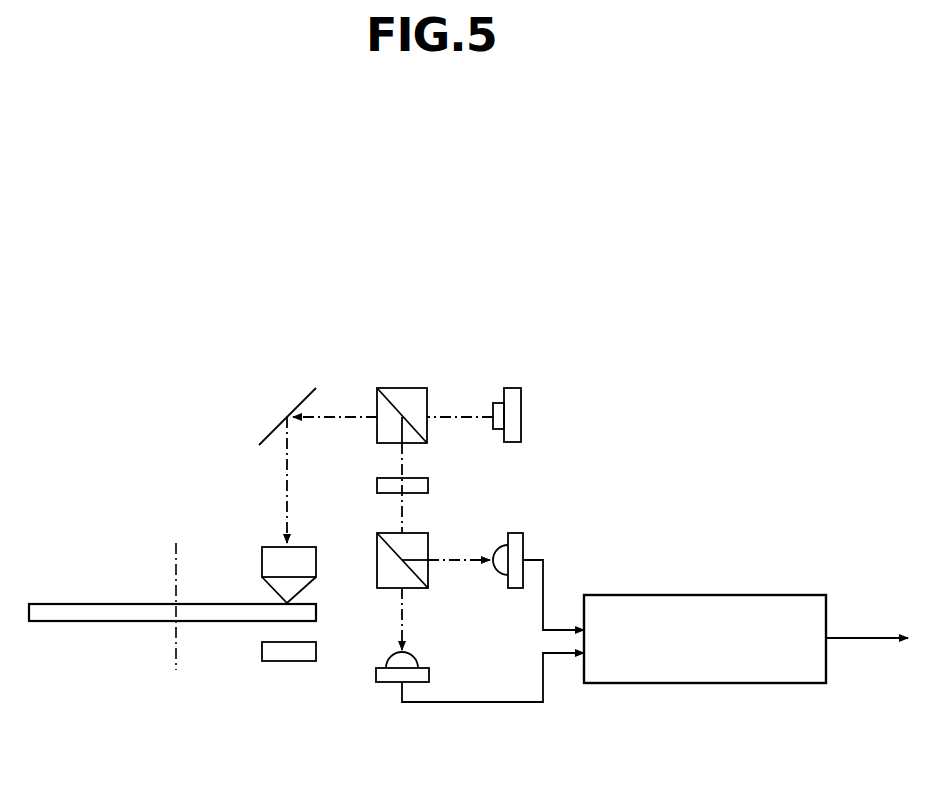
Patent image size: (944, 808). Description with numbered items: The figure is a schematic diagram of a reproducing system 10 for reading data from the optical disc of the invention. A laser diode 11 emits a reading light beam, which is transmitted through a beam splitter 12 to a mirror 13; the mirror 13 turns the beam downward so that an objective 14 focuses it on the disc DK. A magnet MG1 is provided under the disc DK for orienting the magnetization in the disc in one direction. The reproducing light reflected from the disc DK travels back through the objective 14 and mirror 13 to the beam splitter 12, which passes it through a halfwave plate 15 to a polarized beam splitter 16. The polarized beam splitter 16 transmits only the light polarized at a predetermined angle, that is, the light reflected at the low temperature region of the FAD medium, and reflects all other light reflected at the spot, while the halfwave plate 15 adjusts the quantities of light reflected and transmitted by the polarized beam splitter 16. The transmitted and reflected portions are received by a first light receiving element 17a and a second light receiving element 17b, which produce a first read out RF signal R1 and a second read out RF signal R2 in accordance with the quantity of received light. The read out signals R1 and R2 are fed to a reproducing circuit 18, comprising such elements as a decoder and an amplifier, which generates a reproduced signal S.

The reproducing system 10 is at (357, 222).
The laser diode 11 is at (521, 418).
The beam splitter 12 is at (397, 388).
The mirror 13 is at (272, 428).
The objective 14 is at (302, 547).
The halfwave plate 15 is at (427, 487).
The polarized beam splitter 16 is at (428, 547).
The first light receiving element 17a is at (513, 533).
The second light receiving element 17b is at (429, 676).
The reproducing circuit 18 is at (700, 595).
The first read out RF signal R1 is at (543, 587).
The second read out RF signal R2 is at (493, 703).
The reproduced signal S is at (862, 636).
The disc DK is at (133, 604).
The magnet MG1 is at (287, 652).